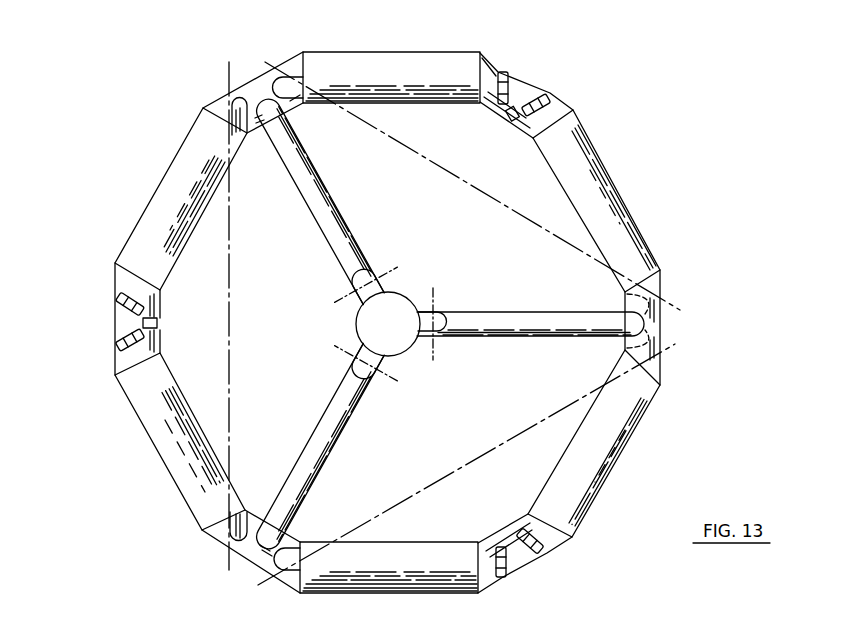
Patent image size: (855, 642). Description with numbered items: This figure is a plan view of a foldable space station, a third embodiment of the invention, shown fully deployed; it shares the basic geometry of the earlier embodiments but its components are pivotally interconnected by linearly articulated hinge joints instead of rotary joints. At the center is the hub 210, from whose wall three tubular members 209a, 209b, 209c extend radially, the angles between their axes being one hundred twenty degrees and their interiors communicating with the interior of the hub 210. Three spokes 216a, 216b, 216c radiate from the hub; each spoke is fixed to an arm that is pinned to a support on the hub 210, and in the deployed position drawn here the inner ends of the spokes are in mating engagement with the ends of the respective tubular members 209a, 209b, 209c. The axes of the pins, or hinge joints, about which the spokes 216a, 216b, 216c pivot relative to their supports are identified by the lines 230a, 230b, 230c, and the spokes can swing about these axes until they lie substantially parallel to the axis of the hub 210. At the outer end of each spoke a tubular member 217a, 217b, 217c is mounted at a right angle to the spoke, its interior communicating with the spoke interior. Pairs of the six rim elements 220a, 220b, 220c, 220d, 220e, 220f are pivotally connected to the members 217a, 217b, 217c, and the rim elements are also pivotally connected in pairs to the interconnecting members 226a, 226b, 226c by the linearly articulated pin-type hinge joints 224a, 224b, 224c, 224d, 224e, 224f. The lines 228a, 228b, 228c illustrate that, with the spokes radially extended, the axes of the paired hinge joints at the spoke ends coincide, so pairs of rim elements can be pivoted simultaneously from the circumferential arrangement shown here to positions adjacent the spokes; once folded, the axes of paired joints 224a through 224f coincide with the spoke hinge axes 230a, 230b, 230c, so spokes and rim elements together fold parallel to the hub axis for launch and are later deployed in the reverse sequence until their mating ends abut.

The hub 210 is at (408, 289).
The spoke 216a is at (540, 312).
The spoke 216b is at (314, 468).
The spoke 216c is at (340, 213).
The tubular member 217a is at (661, 325).
The tubular member 217b is at (267, 563).
The tubular member 217c is at (255, 88).
The tubular member 209a is at (443, 333).
The tubular member 209b is at (357, 362).
The tubular member 209c is at (397, 266).
The line 230a is at (436, 292).
The line 230b is at (388, 380).
The line 230c is at (342, 300).
The rim element 220a is at (637, 247).
The rim element 220b is at (613, 470).
The rim element 220c is at (350, 578).
The rim element 220d is at (153, 445).
The rim element 220e is at (150, 210).
The rim element 220f is at (408, 62).
The interconnecting member 226a is at (528, 87).
The interconnecting member 226b is at (515, 570).
The interconnecting member 226c is at (115, 319).
The hinge joint 224a is at (503, 70).
The hinge joint 224b is at (552, 104).
The hinge joint 224c is at (547, 553).
The hinge joint 224d is at (499, 578).
The hinge joint 224e is at (113, 350).
The hinge joint 224f is at (117, 296).
The line 228a is at (437, 165).
The line 228b is at (450, 482).
The line 228c is at (230, 233).